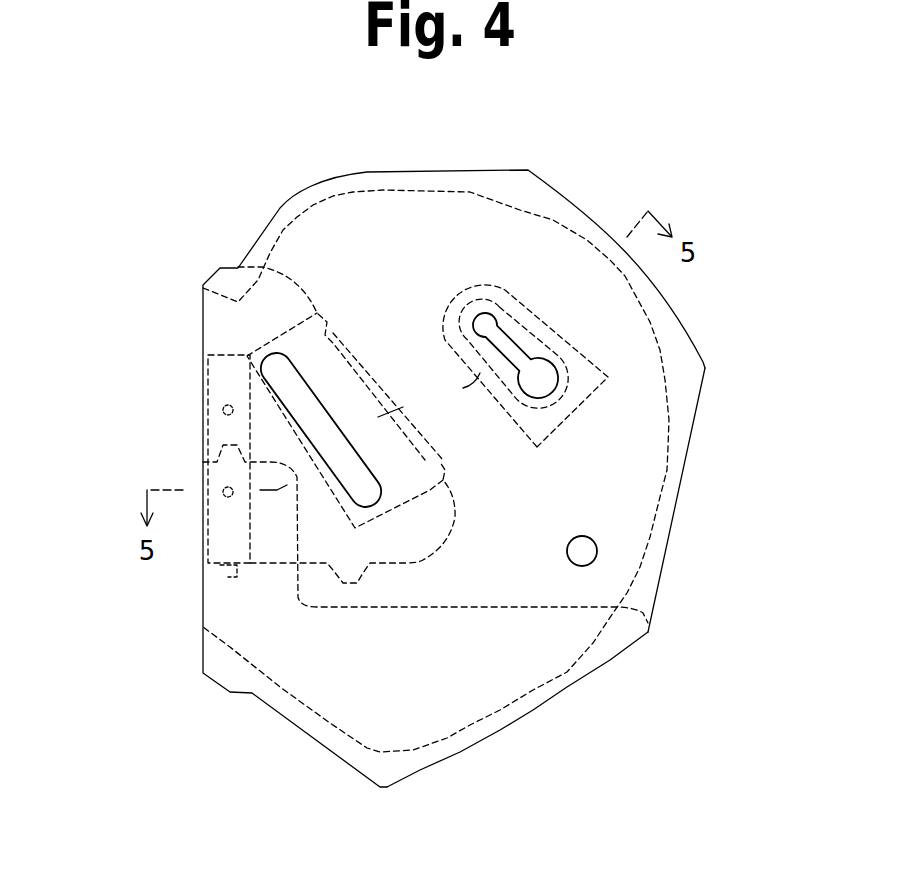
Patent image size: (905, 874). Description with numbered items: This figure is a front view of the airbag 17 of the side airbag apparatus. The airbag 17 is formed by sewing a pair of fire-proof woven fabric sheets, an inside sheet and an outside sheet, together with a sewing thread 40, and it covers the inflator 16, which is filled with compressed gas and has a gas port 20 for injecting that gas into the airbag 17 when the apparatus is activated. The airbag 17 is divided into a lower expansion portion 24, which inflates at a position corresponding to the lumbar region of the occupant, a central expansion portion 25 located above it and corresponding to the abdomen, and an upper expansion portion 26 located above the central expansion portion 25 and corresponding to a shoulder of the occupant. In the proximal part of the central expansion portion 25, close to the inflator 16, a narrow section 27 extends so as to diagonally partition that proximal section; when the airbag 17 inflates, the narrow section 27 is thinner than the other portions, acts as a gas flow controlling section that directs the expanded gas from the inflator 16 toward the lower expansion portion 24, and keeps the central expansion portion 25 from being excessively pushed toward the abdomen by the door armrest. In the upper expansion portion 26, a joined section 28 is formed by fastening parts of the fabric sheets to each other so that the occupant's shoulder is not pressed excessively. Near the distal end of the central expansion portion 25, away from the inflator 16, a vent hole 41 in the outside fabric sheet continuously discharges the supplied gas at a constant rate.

The inflator 16 is at (230, 355).
The airbag 17 is at (594, 187).
The gas port 20 is at (227, 575).
The lower expansion portion 24 is at (478, 675).
The central expansion portion 25 is at (618, 497).
The upper expansion portion 26 is at (405, 220).
The narrow section 27 is at (325, 403).
The joined section 28 is at (488, 323).
The sewing thread 40 is at (668, 445).
The vent hole 41 is at (597, 551).